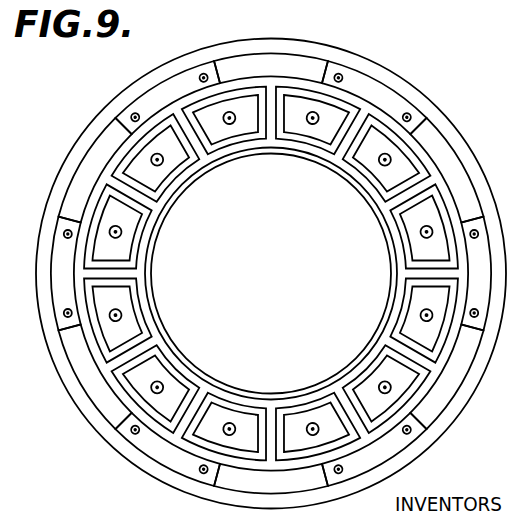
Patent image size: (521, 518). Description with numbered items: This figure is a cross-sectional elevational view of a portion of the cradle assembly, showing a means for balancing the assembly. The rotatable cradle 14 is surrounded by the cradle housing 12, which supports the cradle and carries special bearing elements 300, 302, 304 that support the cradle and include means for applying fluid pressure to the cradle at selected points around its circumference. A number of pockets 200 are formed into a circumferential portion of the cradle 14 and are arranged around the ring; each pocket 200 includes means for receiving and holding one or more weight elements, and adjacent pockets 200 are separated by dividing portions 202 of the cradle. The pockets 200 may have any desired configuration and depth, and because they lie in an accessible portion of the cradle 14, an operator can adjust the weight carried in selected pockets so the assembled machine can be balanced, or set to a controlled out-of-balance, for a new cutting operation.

The cradle housing 12 is at (330, 53).
The cradle 14 is at (168, 193).
The pockets 200 is at (301, 135).
The gap between segments 202 is at (344, 107).
The bearing element 300 is at (163, 100).
The bearing element 302 is at (163, 446).
The bearing element 304 is at (68, 291).